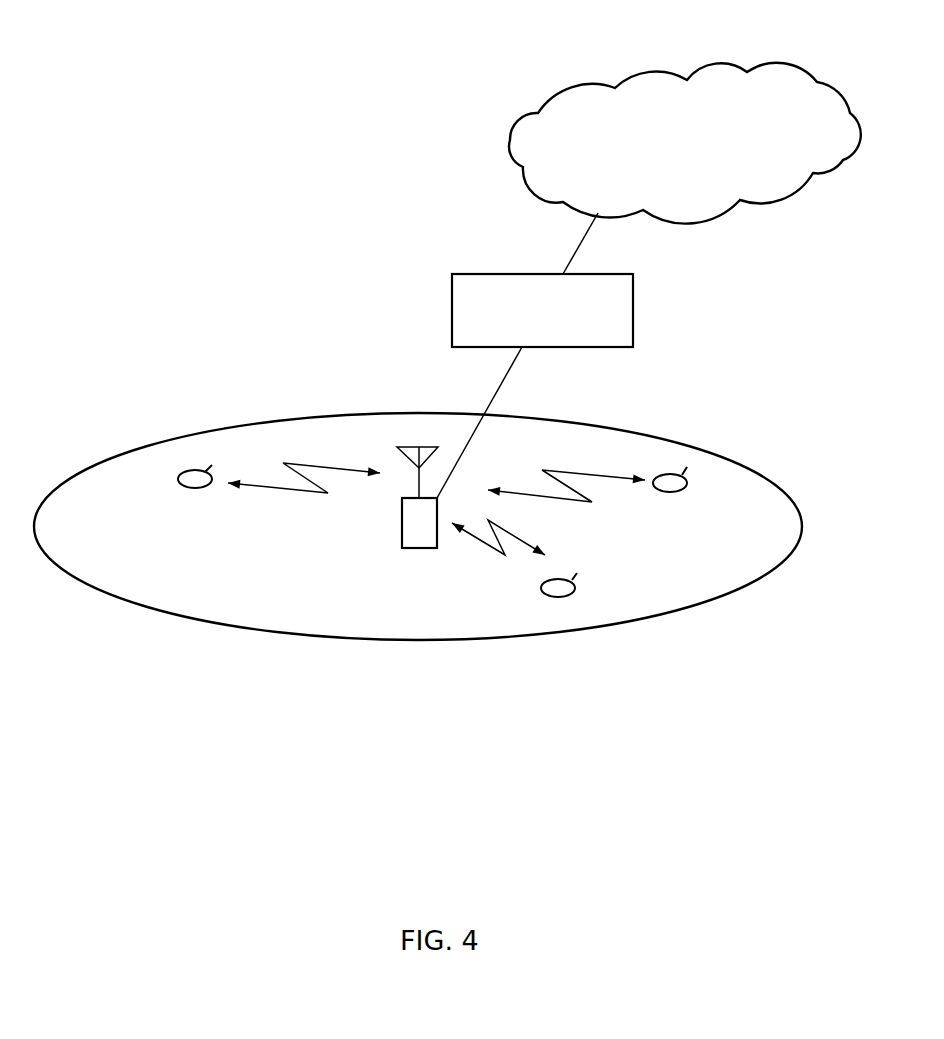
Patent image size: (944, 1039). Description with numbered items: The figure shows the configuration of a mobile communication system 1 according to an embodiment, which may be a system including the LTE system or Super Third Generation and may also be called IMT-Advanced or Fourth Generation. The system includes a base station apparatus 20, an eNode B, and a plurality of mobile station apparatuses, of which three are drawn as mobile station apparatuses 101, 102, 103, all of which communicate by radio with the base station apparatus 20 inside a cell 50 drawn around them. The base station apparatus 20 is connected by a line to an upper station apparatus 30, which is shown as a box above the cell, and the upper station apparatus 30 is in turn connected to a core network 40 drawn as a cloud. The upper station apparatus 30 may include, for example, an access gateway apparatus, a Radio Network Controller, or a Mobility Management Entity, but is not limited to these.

The mobile communication system 1 is at (247, 177).
The mobile station apparatus 101 is at (192, 488).
The mobile station apparatus 102 is at (542, 585).
The mobile station apparatus 103 is at (670, 492).
The base station apparatus 20 is at (402, 525).
The upper station apparatus 30 is at (490, 273).
The core network 40 is at (717, 63).
The cell 50 is at (713, 447).